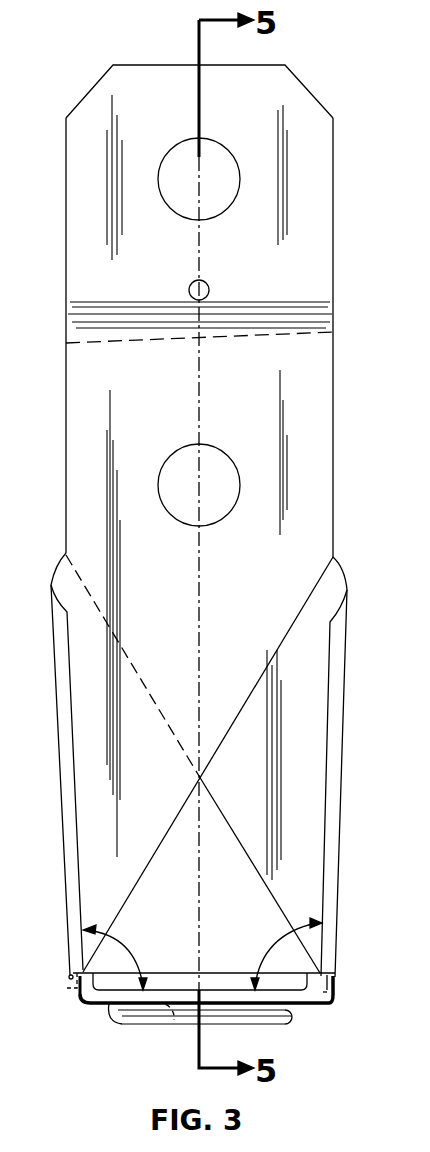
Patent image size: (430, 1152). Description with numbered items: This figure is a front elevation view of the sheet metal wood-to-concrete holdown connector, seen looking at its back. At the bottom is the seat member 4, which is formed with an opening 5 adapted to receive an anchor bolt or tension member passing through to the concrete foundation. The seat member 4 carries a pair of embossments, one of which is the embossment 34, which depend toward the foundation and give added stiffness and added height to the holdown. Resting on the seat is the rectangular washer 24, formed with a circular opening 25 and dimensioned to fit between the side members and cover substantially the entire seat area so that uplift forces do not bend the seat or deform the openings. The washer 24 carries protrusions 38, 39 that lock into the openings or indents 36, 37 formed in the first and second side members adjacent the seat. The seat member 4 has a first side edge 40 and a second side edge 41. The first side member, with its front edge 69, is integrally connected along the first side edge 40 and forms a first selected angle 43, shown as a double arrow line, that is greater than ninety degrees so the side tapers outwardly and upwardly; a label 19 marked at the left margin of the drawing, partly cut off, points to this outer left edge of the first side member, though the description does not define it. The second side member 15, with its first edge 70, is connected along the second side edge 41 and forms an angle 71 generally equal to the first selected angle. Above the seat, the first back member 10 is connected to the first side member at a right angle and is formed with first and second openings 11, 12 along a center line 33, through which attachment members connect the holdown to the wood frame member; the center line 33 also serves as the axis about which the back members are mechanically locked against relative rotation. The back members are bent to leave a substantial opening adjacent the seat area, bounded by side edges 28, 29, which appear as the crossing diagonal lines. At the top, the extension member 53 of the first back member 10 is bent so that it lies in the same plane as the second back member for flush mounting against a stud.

The extension member 53 is at (176, 122).
The second opening 12 is at (222, 151).
The first back member 10 is at (166, 392).
The first opening 11 is at (222, 456).
The center line 33 is at (200, 557).
The left flange outer edge 19 is at (58, 770).
The front edge 69 is at (68, 804).
The second side member 15 is at (340, 773).
The first edge 70 is at (332, 830).
The side edge 29 is at (226, 822).
The side edge 28 is at (156, 855).
The first selected angle 43 is at (120, 944).
The angle 71 is at (268, 938).
The rectangular washer 24 is at (147, 973).
The circular opening 25 is at (235, 988).
The opening or indent 36 is at (70, 976).
The protrusion 38 is at (72, 988).
The first side edge 40 is at (73, 1004).
The second side edge 41 is at (331, 1005).
The protrusion 39 is at (334, 978).
The opening or indent 37 is at (342, 992).
The seat member 4 is at (108, 1010).
The opening 5 is at (176, 1024).
The embossment 34 is at (258, 1024).